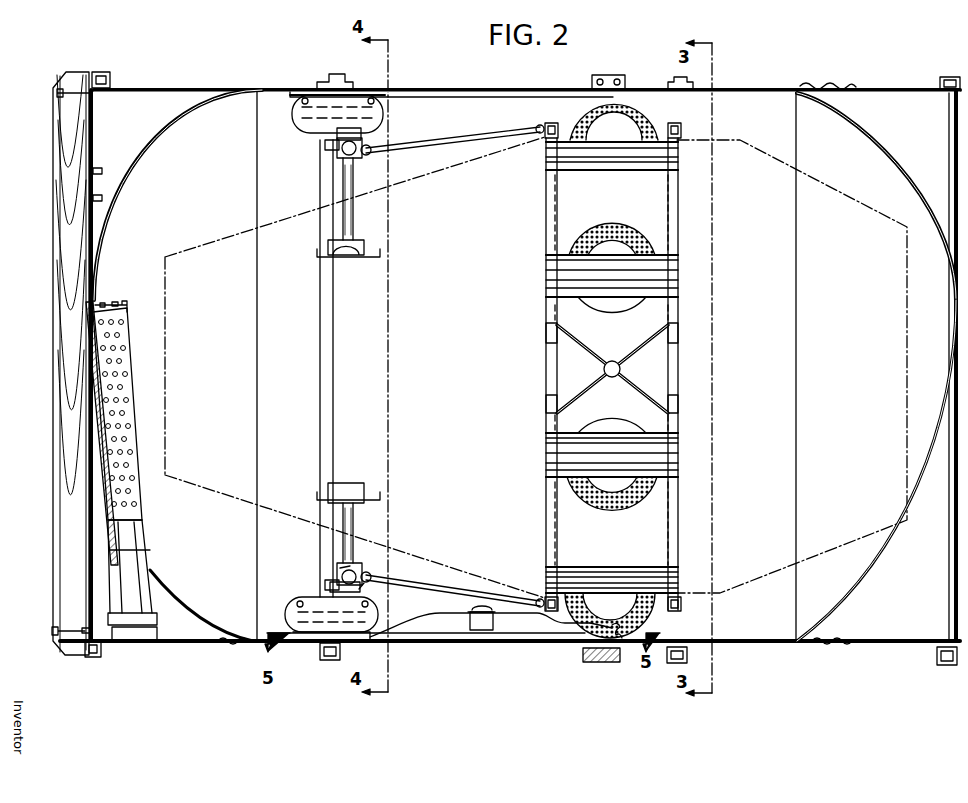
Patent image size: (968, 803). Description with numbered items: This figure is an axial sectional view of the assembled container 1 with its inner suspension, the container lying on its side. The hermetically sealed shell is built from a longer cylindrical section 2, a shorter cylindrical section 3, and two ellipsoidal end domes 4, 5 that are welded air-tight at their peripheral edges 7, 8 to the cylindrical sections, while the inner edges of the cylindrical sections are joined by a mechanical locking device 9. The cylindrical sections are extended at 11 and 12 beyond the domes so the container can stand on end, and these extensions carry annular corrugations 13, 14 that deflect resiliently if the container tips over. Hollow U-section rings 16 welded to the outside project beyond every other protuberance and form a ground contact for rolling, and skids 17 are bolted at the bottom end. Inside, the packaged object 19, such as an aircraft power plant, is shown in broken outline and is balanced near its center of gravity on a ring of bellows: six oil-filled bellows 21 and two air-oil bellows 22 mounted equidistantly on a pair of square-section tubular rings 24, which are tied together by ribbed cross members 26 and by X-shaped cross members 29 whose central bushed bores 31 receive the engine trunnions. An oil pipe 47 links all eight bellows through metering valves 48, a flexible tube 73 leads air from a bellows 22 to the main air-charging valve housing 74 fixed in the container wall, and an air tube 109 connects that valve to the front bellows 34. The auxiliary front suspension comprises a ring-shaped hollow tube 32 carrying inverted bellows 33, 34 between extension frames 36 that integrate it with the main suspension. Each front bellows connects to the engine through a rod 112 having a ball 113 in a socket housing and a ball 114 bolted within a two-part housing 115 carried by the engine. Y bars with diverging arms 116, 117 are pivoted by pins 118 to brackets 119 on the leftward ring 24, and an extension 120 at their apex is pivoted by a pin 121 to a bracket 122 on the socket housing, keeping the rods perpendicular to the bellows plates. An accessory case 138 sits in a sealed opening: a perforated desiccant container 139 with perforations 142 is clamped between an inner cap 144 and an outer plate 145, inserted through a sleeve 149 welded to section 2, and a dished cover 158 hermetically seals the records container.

The container 1 is at (156, 86).
The cylindrical section 2 is at (467, 89).
The cylindrical section 3 is at (754, 90).
The end dome 4 is at (178, 128).
The end dome 5 is at (895, 148).
The peripheral edge 7 is at (280, 560).
The peripheral edge 8 is at (795, 605).
The mechanical locking device 9 is at (613, 74).
The extension 11 is at (131, 84).
The extension 12 is at (890, 89).
The annular corrugation 13 is at (230, 646).
The annular corrugation 14 is at (836, 647).
The hollow ring 16 is at (99, 656).
The skid 17 is at (55, 590).
The packaged object 19 is at (208, 504).
The bellows 21 is at (658, 120).
The air-oil bellows 22 is at (648, 616).
The ring 24 is at (546, 520).
The cross member 26 is at (676, 170).
The X-shaped cross member 29 is at (662, 366).
The bushed bore 31 is at (618, 362).
The ring-shaped hollow tube 32 is at (322, 172).
The bellows 33 is at (396, 113).
The bellows 34 is at (382, 611).
The extension 36 is at (492, 99).
The oil pipe 47 is at (630, 633).
The metering valve 48 is at (326, 145).
The flexible tube 73 is at (548, 611).
The air valve housing 74 is at (480, 632).
The air tube 109 is at (358, 155).
The rod 112 is at (353, 210).
The ball 113 is at (363, 134).
The ball 114 is at (360, 240).
The two-part housing 115 is at (374, 244).
The diverging arm 116 is at (508, 125).
The diverging arm 117 is at (455, 590).
The pin 118 is at (552, 123).
The bracket 119 is at (539, 137).
The extension 120 is at (366, 583).
The pin 121 is at (372, 574).
The bracket 122 is at (350, 566).
The accessory case 138 is at (152, 527).
The desiccant container 139 is at (125, 330).
The perforation 142 is at (122, 352).
The inner cap 144 is at (128, 300).
The outer plate 145 is at (157, 624).
The sleeve 149 is at (152, 568).
The dished cover 158 is at (136, 641).